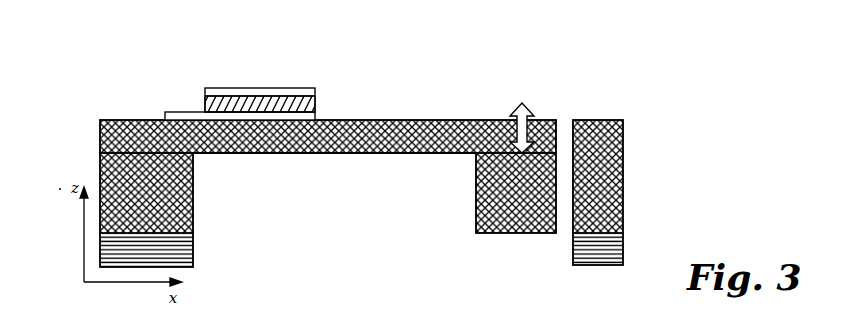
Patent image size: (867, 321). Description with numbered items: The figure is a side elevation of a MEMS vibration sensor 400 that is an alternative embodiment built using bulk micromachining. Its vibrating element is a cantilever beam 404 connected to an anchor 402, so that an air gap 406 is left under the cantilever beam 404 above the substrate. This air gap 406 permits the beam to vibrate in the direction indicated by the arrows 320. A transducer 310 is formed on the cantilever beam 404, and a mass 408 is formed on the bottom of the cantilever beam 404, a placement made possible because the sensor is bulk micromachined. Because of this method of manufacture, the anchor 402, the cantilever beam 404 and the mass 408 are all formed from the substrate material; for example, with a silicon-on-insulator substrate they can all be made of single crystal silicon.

The transducer 310 is at (259, 82).
The arrows 320 is at (530, 116).
The MEMS vibration sensor 400 is at (447, 80).
The anchor 402 is at (146, 210).
The cantilever beam 404 is at (328, 136).
The air gap 406 is at (334, 174).
The mass 408 is at (476, 187).